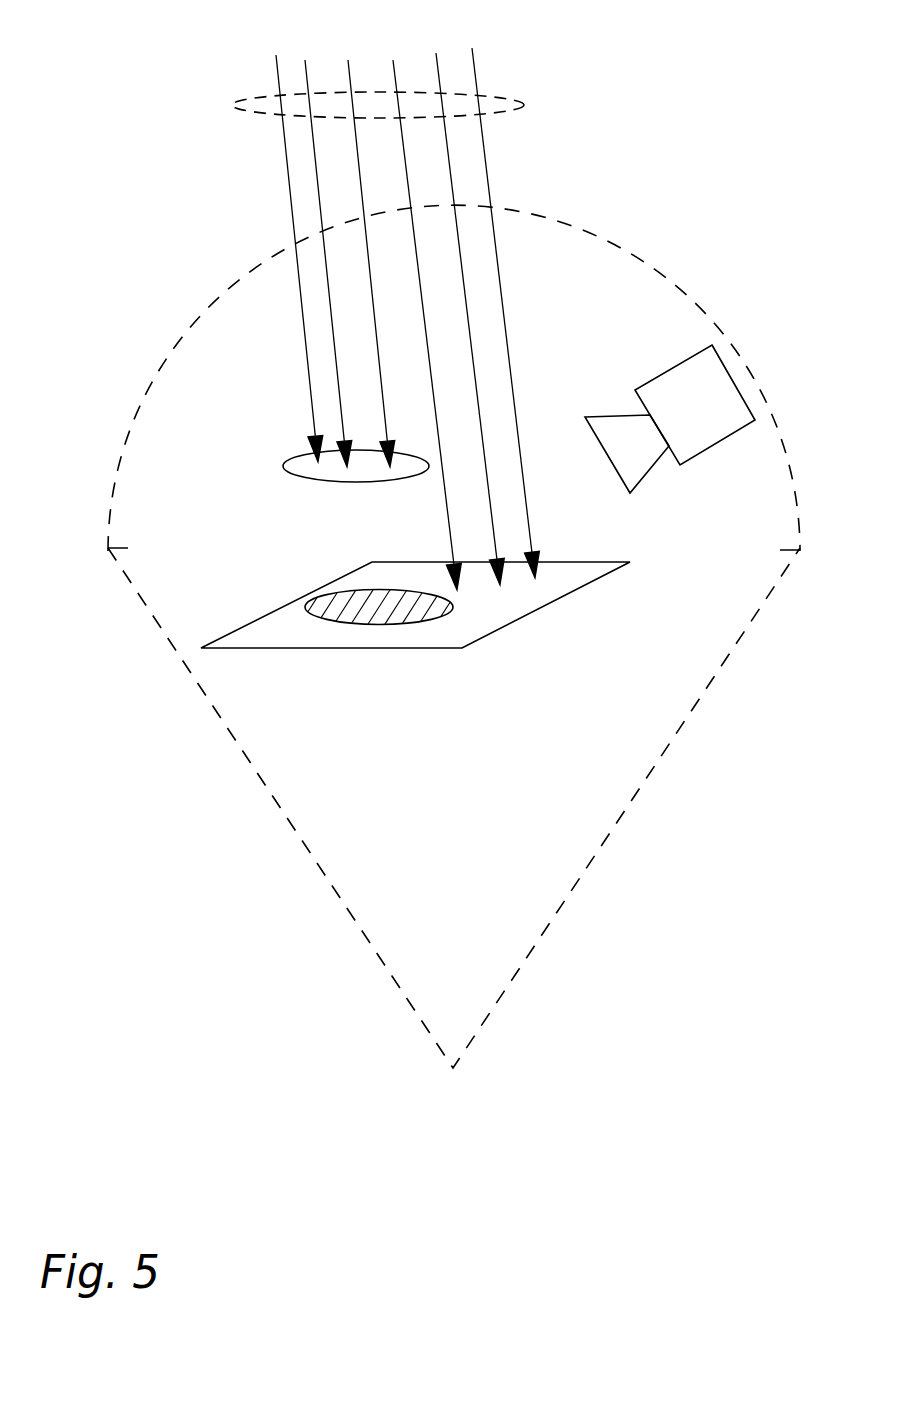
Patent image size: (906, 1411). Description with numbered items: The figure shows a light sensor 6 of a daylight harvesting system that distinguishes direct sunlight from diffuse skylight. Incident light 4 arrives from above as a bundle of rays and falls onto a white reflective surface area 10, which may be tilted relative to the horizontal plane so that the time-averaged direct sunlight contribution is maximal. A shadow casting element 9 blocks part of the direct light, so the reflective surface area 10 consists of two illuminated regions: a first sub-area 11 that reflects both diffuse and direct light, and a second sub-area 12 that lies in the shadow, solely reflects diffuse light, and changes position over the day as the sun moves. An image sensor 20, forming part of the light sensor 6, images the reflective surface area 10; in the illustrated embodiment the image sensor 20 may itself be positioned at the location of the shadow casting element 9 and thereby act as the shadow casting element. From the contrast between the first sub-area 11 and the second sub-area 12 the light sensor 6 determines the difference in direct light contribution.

The incident light 4 is at (250, 112).
The light sensor 6 is at (628, 803).
The shadow casting element 9 is at (290, 470).
The reflective surface area 10 is at (300, 598).
The first sub-area 11 is at (480, 610).
The second sub-area 12 is at (357, 623).
The image sensor 20 is at (718, 443).